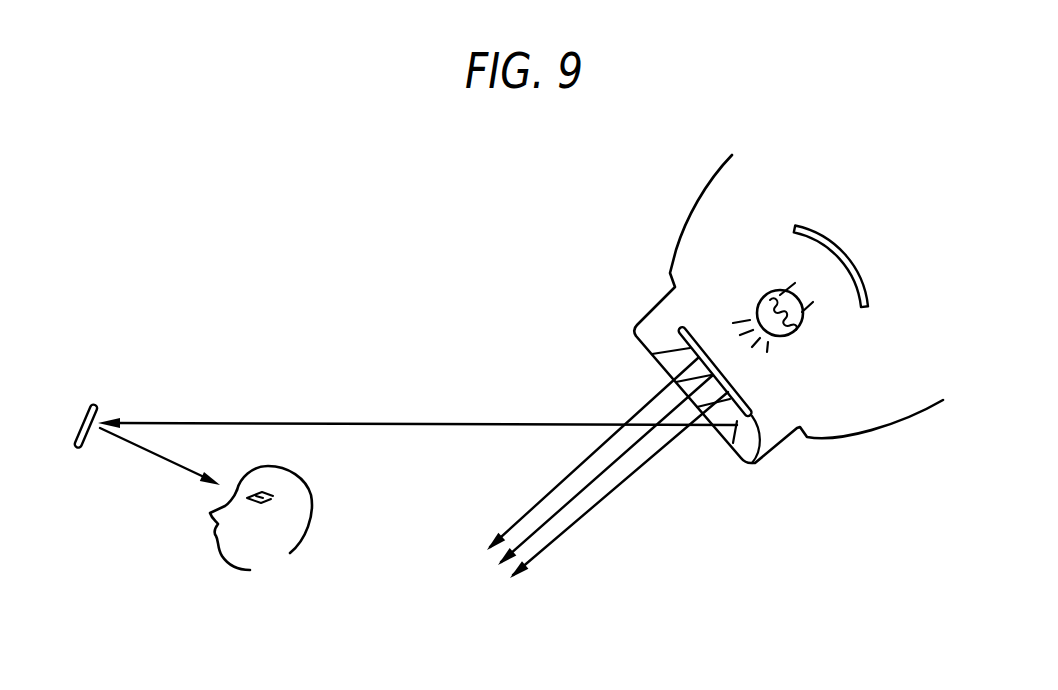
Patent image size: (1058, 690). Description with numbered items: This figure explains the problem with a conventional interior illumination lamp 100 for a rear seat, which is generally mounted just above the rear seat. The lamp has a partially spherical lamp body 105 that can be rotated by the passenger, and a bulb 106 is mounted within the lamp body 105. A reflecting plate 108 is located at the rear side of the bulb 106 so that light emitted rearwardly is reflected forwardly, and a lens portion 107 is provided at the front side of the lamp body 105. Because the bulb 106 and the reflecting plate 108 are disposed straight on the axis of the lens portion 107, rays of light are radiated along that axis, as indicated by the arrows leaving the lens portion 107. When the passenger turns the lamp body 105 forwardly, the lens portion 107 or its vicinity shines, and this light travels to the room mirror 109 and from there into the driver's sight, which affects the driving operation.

The interior illumination lamp 100 is at (642, 274).
The lamp body 105 is at (688, 211).
The bulb 106 is at (802, 331).
The lens portion 107 is at (758, 461).
The reflecting plate 108 is at (846, 256).
The room mirror 109 is at (99, 413).